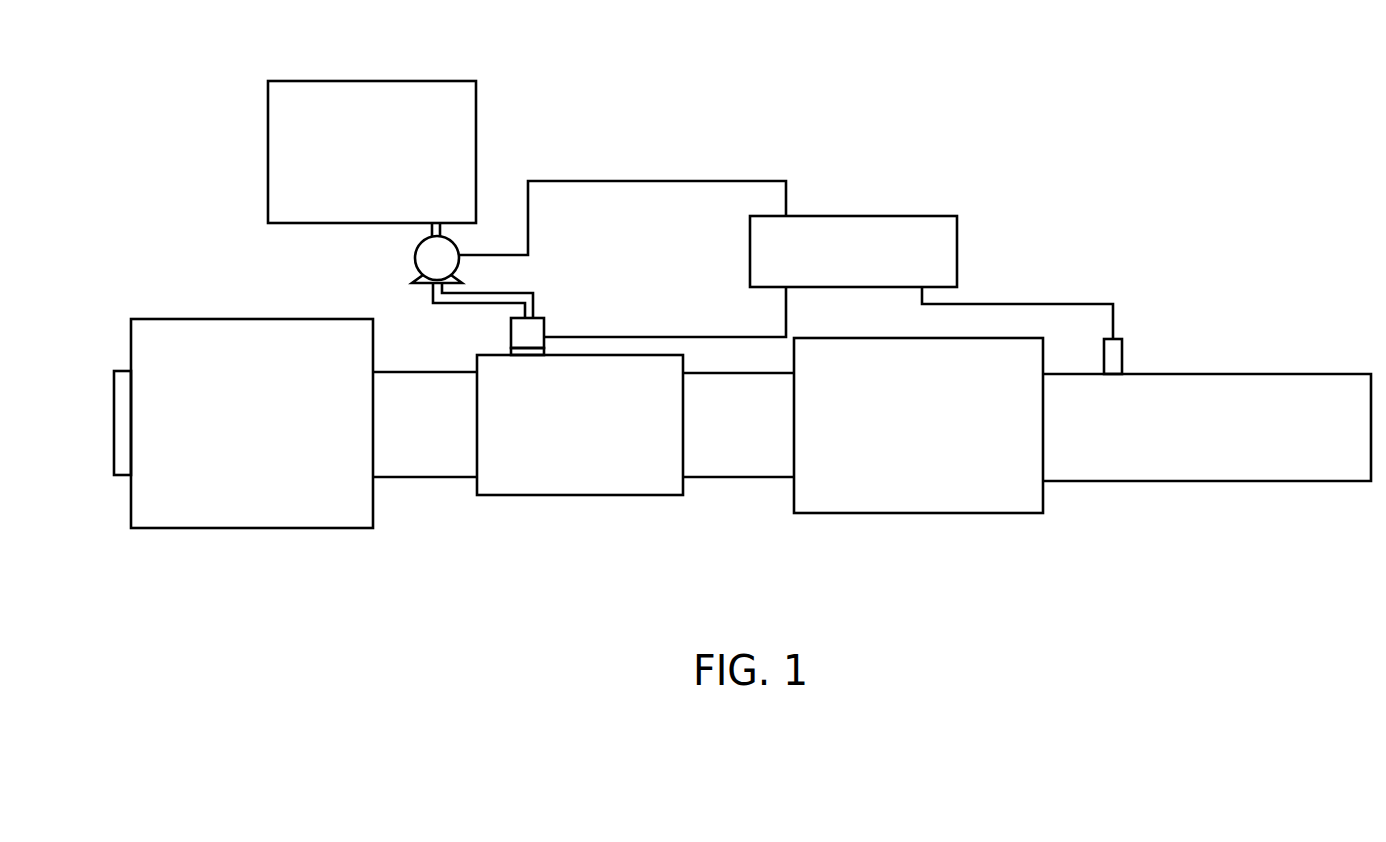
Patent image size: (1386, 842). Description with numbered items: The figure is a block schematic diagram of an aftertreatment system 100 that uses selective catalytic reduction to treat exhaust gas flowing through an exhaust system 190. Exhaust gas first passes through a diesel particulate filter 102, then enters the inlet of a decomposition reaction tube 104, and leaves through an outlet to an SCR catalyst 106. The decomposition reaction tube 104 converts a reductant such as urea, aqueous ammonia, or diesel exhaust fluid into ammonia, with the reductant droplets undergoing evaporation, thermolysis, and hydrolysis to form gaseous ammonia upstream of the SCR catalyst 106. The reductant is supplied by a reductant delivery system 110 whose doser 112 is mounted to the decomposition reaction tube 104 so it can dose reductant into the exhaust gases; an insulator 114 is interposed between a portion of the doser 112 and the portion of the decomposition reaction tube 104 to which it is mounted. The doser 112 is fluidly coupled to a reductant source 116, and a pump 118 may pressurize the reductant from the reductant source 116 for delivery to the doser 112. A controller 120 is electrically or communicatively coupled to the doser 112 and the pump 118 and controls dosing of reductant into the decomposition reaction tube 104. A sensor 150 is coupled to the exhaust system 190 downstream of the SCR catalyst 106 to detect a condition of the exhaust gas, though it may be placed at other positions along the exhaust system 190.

The aftertreatment system 100 is at (996, 286).
The diesel particulate filter 102 is at (282, 528).
The decomposition reaction tube 104 is at (672, 354).
The SCR catalyst 106 is at (927, 513).
The reductant delivery system 110 is at (635, 267).
The doser 112 is at (545, 330).
The insulator 114 is at (512, 350).
The reductant source 116 is at (432, 81).
The pump 118 is at (415, 262).
The controller 120 is at (838, 216).
The sensor 150 is at (1140, 356).
The exhaust system 190 is at (467, 563).